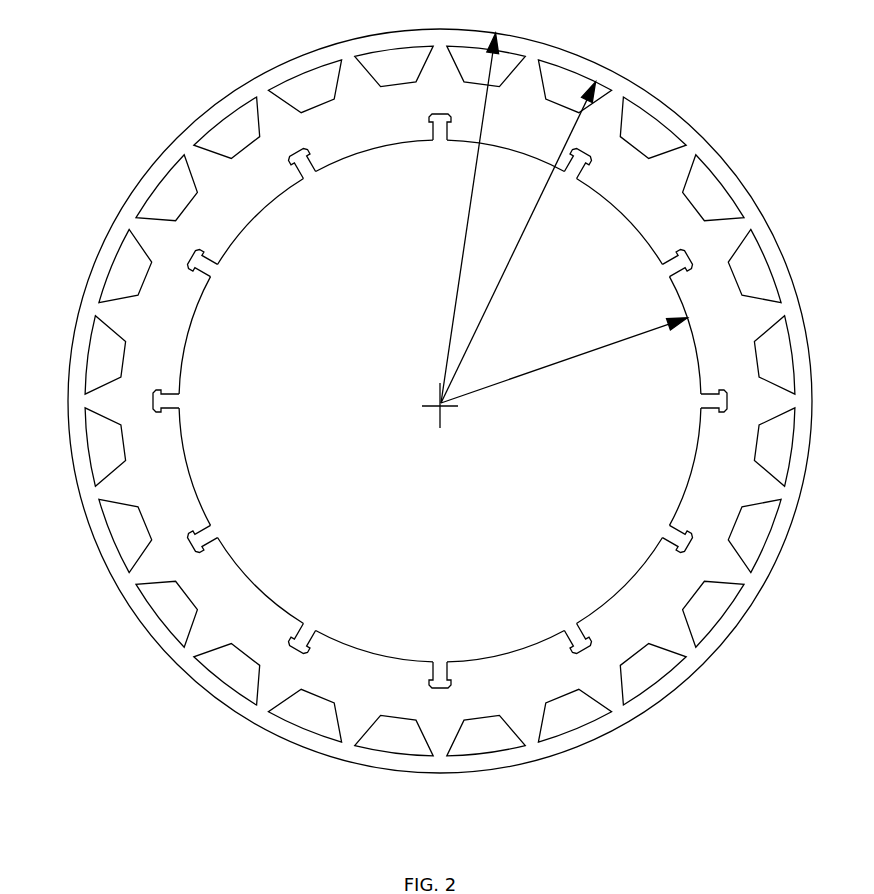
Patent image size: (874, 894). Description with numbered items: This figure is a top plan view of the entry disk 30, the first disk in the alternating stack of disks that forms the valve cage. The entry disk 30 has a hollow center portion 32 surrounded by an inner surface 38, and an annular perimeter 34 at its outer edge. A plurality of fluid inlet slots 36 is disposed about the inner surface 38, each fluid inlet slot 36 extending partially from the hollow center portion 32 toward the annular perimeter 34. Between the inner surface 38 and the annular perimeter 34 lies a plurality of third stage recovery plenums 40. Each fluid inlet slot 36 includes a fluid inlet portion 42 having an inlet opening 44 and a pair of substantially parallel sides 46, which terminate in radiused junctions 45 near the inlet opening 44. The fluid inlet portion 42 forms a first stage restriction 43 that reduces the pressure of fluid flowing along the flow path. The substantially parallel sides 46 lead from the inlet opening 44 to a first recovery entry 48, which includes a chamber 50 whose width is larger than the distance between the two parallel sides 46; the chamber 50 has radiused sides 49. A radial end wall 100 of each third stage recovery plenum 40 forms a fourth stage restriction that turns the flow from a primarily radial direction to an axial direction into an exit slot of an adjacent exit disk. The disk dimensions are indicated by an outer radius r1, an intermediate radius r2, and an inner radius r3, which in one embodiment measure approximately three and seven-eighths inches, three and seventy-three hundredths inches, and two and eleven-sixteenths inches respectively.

The entry disk 30 is at (708, 115).
The hollow center portion 32 is at (429, 461).
The annular perimeter 34 is at (217, 102).
The fluid inlet slot 36 is at (172, 402).
The inner surface 38 is at (183, 322).
The third stage recovery plenum 40 is at (118, 263).
The fluid inlet portion 42 is at (305, 627).
The first stage restriction 43 is at (714, 411).
The inlet opening 44 is at (572, 625).
The radiused junction 45 is at (432, 665).
The substantially parallel sides 46 is at (675, 522).
The first recovery entry 48 is at (575, 647).
The radiused sides 49 is at (428, 683).
The chamber 50 is at (687, 543).
The radial end wall 100 is at (210, 677).
The outer radius r1 is at (460, 262).
The intermediate radius r2 is at (527, 222).
The inner radius r3 is at (608, 342).